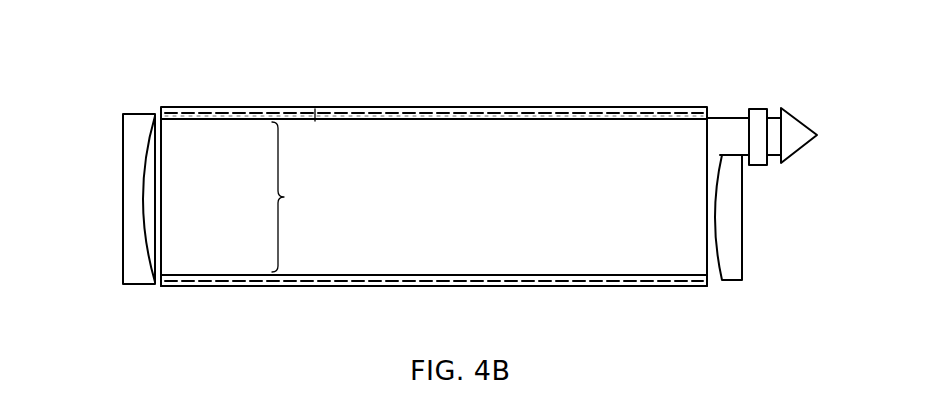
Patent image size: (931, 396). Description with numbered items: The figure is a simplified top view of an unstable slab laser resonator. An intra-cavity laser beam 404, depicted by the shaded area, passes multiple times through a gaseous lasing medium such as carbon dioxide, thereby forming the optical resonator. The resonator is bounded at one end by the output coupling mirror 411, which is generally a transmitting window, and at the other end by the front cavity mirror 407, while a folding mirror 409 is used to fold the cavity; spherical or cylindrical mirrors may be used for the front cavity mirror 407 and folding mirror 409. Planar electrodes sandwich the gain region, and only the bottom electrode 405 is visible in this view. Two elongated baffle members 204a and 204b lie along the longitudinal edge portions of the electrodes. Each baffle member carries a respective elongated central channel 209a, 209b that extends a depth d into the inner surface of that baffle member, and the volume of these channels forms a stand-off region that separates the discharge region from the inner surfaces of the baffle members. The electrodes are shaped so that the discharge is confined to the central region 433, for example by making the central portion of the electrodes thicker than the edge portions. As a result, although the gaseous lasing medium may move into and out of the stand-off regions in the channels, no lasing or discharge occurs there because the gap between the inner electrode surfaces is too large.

The elongated baffle member 204a is at (258, 285).
The elongated baffle member 204b is at (233, 108).
The elongated central channel 209a is at (433, 112).
The elongated central channel 209b is at (365, 112).
The intra-cavity laser beam 404 is at (470, 190).
The bottom electrode 405 is at (163, 222).
The front cavity mirror 407 is at (738, 223).
The folding mirror 409 is at (123, 198).
The output coupling mirror 411 is at (759, 109).
The central region 433 is at (298, 197).
The depth d is at (300, 107).